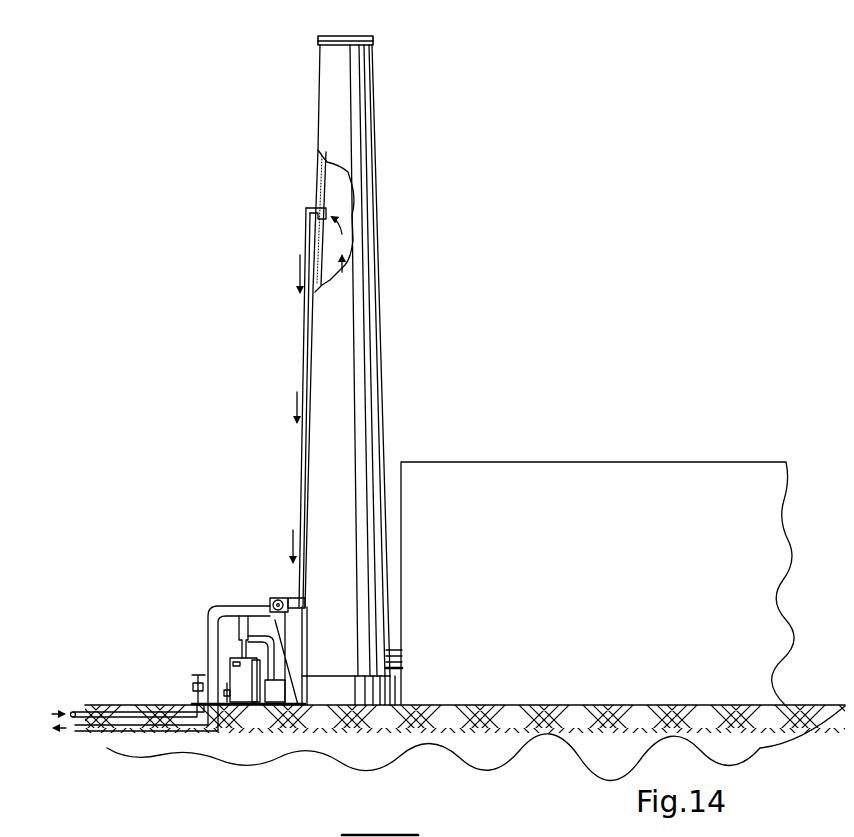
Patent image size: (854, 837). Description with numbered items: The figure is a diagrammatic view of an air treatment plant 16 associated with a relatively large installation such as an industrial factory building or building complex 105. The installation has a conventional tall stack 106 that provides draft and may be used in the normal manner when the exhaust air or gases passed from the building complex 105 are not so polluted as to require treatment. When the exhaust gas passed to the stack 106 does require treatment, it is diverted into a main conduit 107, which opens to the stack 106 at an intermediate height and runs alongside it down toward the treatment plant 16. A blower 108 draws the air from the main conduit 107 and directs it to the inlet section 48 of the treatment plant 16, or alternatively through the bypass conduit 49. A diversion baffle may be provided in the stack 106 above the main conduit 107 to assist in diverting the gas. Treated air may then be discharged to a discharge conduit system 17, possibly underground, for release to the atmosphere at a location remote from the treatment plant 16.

The treatment plant 16 is at (226, 632).
The discharge conduit system 17 is at (122, 733).
The inlet section 48 is at (262, 606).
The bypass conduit 49 is at (238, 653).
The building complex 105 is at (660, 518).
The stack 106 is at (378, 294).
The main conduit 107 is at (306, 340).
The blower 108 is at (283, 589).